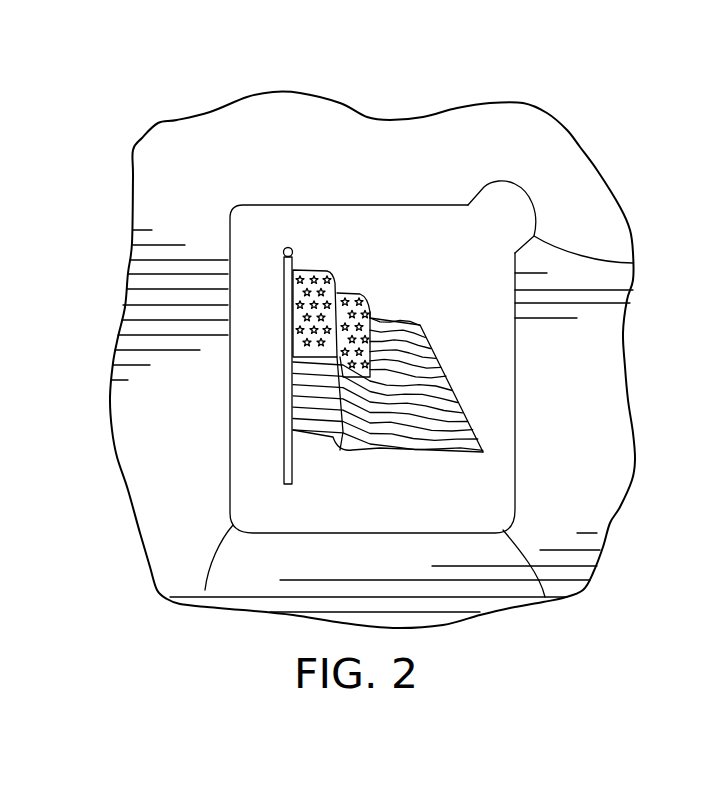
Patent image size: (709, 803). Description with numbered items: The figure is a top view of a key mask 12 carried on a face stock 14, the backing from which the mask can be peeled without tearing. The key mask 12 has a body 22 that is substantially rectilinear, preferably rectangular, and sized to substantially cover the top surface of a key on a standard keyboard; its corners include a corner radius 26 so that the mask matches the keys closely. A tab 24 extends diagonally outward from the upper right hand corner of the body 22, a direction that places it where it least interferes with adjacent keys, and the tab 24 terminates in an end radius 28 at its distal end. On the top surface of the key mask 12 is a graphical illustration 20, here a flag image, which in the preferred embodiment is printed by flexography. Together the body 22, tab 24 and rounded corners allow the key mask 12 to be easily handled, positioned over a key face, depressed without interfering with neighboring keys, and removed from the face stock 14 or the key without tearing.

The key mask 12 is at (345, 200).
The face stock 14 is at (228, 147).
The graphical illustration 20 is at (305, 399).
The body 22 is at (515, 382).
The tab 24 is at (513, 208).
The corner radius 26 is at (205, 590).
The end radius 28 is at (633, 263).